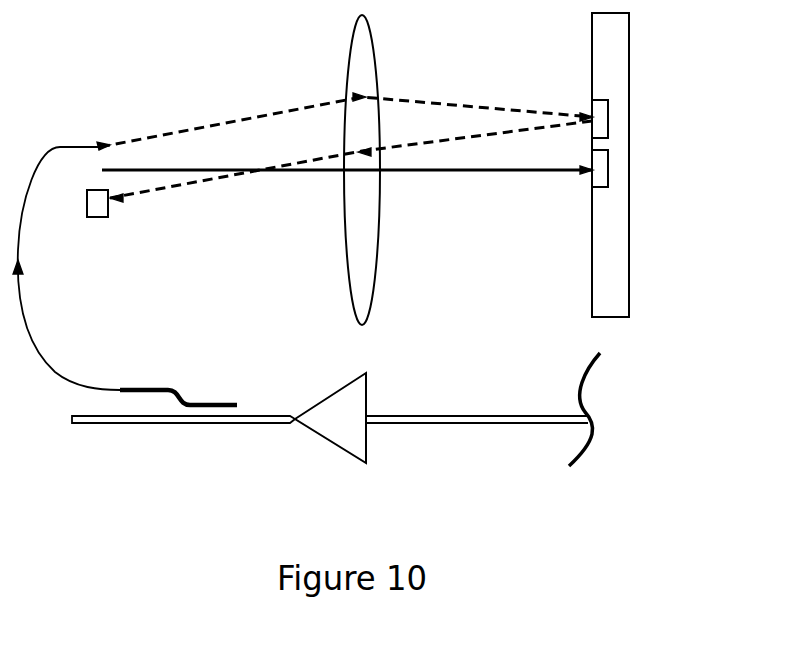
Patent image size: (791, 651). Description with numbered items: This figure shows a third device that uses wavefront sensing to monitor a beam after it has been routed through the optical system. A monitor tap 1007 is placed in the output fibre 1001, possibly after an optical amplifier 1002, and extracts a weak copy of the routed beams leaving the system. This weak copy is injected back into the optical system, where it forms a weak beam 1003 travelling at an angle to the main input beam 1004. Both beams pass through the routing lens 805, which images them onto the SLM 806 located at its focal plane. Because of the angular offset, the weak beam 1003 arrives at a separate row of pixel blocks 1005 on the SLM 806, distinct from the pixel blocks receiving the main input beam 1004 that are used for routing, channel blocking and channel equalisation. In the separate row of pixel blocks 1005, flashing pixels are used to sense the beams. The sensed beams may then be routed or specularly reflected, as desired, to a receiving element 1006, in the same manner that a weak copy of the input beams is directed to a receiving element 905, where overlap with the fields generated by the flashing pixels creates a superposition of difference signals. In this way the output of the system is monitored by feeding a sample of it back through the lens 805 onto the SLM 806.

The routing lens 805 is at (365, 62).
The SLM 806 is at (610, 71).
The receiving element 905 is at (603, 173).
The output fibre 1001 is at (208, 432).
The optical amplifier 1002 is at (363, 447).
The weak beam 1003 is at (233, 108).
The main input beam 1004 is at (467, 172).
The separate row of pixel blocks 1005 is at (608, 125).
The receiving element 1006 is at (100, 220).
The monitor tap 1007 is at (147, 381).